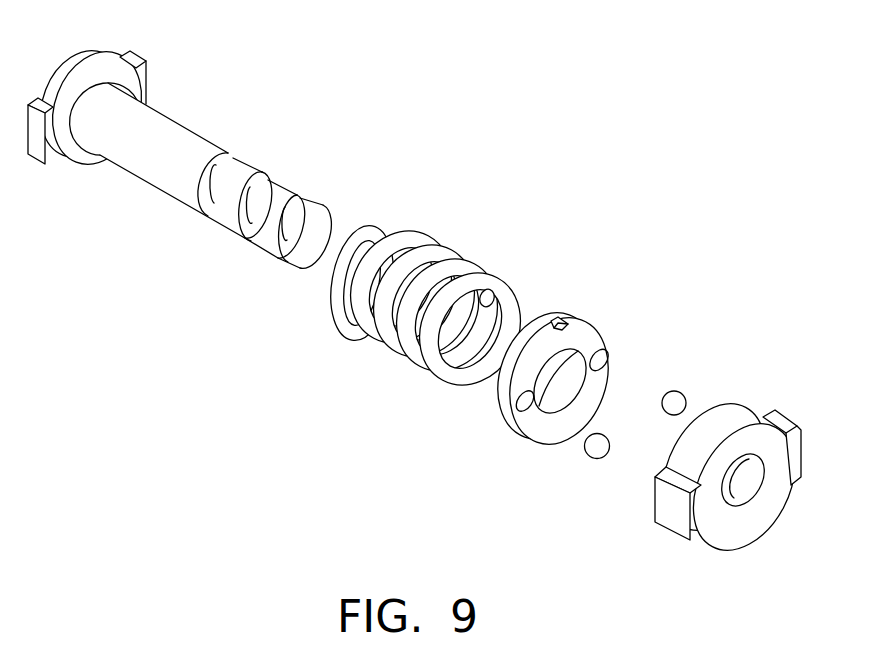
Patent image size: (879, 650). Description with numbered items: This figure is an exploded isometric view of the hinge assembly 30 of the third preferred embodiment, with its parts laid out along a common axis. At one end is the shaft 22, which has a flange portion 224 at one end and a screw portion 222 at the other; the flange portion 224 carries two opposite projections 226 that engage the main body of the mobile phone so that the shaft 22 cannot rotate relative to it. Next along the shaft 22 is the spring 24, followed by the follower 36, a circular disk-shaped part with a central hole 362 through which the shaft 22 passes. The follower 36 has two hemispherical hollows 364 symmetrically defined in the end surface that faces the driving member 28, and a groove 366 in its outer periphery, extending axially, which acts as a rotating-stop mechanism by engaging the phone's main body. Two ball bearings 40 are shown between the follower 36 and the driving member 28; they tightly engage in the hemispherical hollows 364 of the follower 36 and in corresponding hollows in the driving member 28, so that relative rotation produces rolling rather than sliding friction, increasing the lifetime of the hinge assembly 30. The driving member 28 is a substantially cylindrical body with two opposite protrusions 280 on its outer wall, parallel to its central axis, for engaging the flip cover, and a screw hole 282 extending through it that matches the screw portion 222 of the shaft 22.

The shaft 22 is at (178, 155).
The screw portion 222 is at (242, 237).
The flange portion 224 is at (105, 56).
The projections 226 is at (52, 146).
The spring 24 is at (448, 267).
The hinge assembly 30 is at (462, 130).
The follower 36 is at (532, 389).
The central hole 362 is at (563, 383).
The hemispherical hollows 364 is at (522, 404).
The groove 366 is at (559, 319).
The ball bearings 40 is at (676, 401).
The driving member 28 is at (740, 474).
The protrusions 280 is at (772, 412).
The screw hole 282 is at (743, 485).